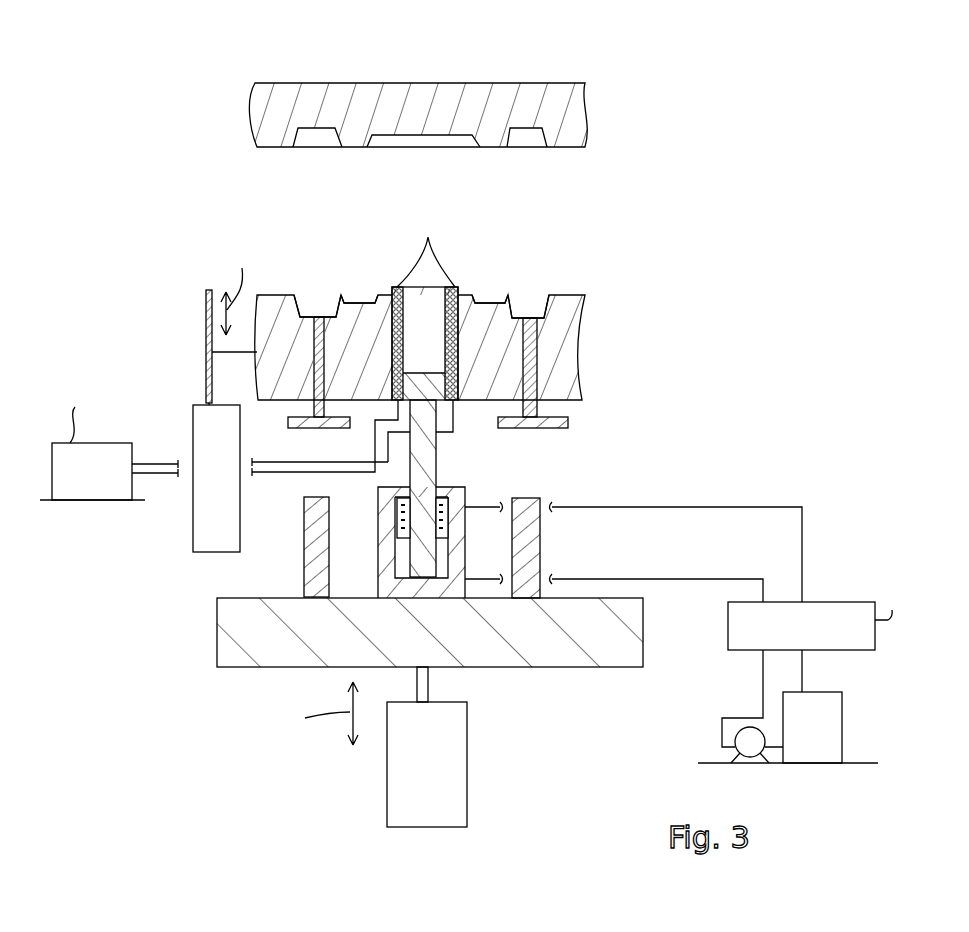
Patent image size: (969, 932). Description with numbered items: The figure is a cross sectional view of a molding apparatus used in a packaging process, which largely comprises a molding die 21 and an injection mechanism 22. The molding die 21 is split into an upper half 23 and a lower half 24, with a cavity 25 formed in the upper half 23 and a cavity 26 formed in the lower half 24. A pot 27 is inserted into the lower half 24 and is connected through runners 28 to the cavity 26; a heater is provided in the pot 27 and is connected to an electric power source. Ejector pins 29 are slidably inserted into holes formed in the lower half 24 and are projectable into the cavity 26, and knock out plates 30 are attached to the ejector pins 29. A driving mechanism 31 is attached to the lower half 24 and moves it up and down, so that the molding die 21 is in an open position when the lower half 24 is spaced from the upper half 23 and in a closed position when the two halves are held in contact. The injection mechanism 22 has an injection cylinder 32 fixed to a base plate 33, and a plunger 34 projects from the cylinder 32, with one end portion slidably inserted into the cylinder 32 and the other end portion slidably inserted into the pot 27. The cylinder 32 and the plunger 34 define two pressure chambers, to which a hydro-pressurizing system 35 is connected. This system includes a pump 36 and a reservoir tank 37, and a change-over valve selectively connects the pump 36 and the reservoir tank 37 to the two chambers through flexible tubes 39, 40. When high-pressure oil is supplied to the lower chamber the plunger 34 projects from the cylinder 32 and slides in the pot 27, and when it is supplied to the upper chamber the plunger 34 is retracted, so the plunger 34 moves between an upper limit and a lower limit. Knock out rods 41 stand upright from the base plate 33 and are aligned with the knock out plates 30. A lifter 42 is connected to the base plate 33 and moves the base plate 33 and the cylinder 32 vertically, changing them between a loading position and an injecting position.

The molding die 21 is at (463, 103).
The injection mechanism 22 is at (472, 517).
The upper half 23 is at (586, 100).
The lower half 24 is at (587, 308).
The cavity 25 is at (321, 136).
The cavity 26 is at (313, 307).
The pot 27 is at (455, 287).
The runners 28 is at (365, 300).
The ejector pins 29 is at (297, 408).
The knock out plates 30 is at (312, 428).
The driving mechanism 31 is at (191, 331).
The injection cylinder 32 is at (463, 487).
The base plate 33 is at (217, 642).
The plunger 34 is at (437, 462).
The hydro-pressurizing system 35 is at (728, 635).
The pump 36 is at (752, 745).
The reservoir tank 37 is at (845, 747).
The flexible tube 39 is at (648, 507).
The flexible tube 40 is at (652, 579).
The knock out rods 41 is at (304, 568).
The lifter 42 is at (387, 785).